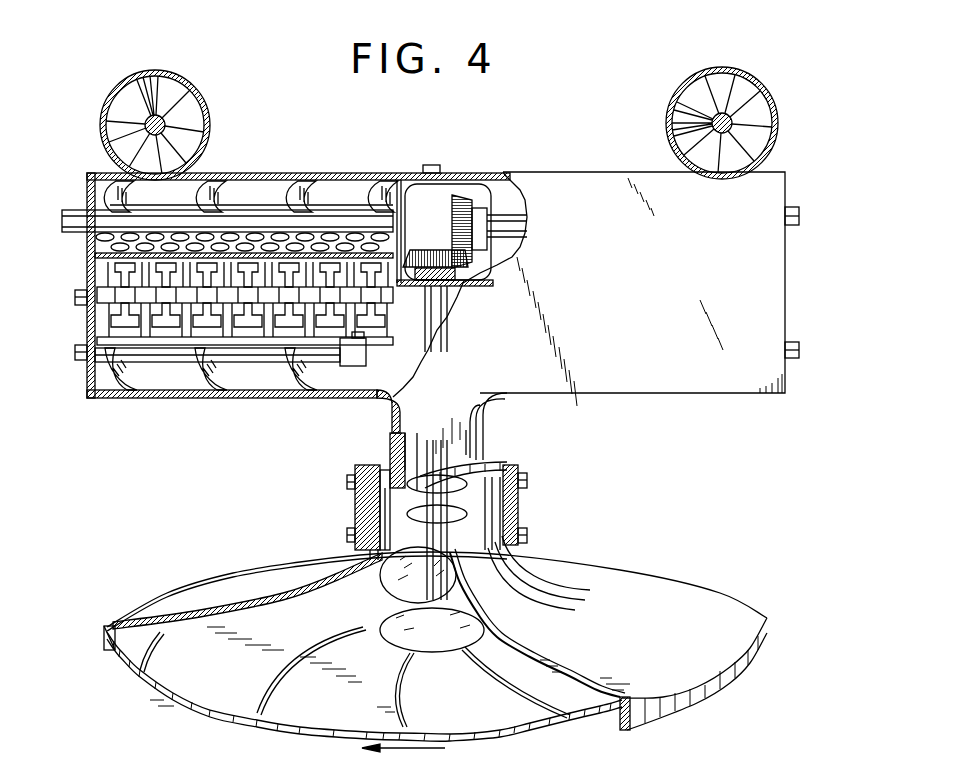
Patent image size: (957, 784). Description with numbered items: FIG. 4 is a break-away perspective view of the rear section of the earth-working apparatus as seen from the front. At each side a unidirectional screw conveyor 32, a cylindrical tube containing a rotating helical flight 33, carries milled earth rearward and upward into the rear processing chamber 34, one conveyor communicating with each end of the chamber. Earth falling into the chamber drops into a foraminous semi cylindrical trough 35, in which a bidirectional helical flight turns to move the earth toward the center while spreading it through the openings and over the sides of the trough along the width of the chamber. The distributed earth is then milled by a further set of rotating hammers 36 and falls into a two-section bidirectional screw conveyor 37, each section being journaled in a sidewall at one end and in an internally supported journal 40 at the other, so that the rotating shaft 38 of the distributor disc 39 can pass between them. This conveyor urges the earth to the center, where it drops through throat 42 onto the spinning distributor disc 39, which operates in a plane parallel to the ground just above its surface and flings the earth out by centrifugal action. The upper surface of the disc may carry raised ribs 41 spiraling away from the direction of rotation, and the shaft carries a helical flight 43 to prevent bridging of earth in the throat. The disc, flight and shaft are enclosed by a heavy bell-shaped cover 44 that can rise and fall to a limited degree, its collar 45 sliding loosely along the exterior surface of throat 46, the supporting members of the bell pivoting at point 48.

The unidirectional screw conveyor 32 is at (202, 100).
The rotating helical flight 33 is at (192, 115).
The rear processing chamber 34 is at (576, 183).
The foraminous semi cylindrical trough 35 is at (100, 240).
The rotating hammers 36 is at (110, 300).
The bidirectional screw conveyor 37 is at (110, 360).
The rotating shaft 38 is at (433, 322).
The distributor disc 39 is at (186, 675).
The internally supported journal 40 is at (360, 352).
The raised ribs 41 is at (494, 684).
The throat 42 is at (410, 450).
The helical flight 43 is at (392, 577).
The bell-shaped cover 44 is at (706, 598).
The collar 45 is at (370, 507).
The throat 46 is at (466, 424).
The pivot point 48 is at (525, 532).